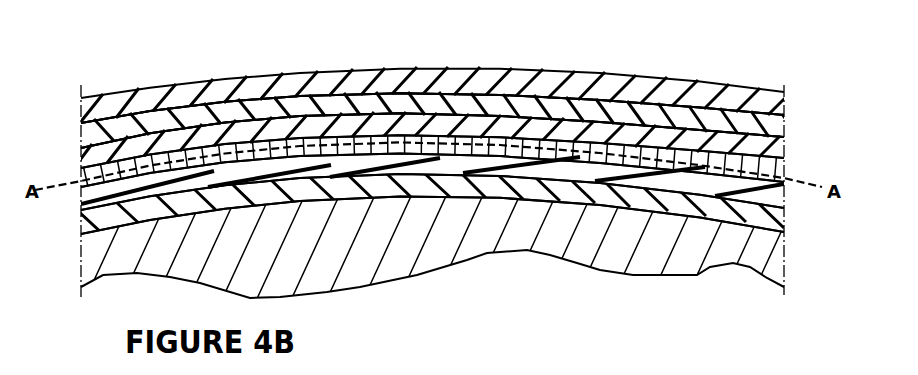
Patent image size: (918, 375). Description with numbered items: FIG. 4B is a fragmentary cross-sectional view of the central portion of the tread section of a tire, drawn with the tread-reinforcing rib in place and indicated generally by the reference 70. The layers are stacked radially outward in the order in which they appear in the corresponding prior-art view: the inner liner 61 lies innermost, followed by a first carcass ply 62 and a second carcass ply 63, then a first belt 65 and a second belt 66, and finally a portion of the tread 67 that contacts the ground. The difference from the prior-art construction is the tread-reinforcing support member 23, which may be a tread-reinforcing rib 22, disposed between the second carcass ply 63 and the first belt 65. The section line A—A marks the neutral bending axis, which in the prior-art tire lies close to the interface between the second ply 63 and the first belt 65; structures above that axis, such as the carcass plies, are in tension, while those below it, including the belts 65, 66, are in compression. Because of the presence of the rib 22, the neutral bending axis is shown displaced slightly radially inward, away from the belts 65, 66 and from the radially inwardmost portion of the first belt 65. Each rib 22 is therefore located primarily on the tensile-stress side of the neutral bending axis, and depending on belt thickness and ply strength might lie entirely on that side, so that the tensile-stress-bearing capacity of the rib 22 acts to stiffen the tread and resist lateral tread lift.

The tire tread/belt structure 70 is at (763, 70).
The inner liner 61 is at (331, 82).
The first carcass ply 62 is at (370, 101).
The second carcass ply 63 is at (501, 122).
The tread-reinforcing support member 23 is at (428, 104).
The tread-reinforcing rib 22 is at (576, 137).
The first belt 65 is at (452, 165).
The second belt 66 is at (491, 192).
The tread 67 is at (592, 238).